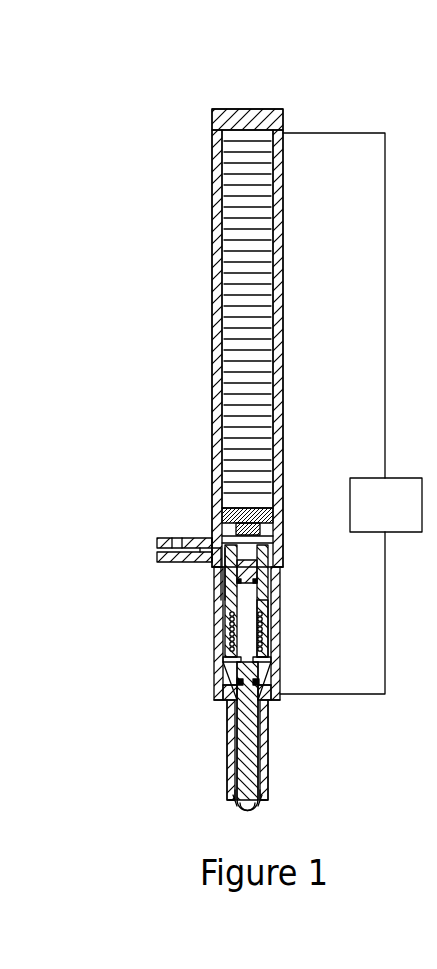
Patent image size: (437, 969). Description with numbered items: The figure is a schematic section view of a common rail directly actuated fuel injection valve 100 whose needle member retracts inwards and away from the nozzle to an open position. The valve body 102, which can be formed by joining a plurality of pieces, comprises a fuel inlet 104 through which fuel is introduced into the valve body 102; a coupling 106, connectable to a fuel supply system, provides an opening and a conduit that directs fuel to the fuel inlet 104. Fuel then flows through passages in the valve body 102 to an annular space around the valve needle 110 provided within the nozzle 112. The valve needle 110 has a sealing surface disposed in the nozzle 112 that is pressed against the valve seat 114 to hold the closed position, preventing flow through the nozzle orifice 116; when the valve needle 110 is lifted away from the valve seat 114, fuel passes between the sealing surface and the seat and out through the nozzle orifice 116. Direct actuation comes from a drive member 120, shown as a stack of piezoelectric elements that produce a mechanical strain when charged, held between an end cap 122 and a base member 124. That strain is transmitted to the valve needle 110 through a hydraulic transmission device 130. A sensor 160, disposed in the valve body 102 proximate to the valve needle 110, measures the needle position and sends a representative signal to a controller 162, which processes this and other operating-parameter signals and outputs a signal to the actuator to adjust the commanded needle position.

The fuel injection valve 100 is at (115, 124).
The valve body 102 is at (263, 672).
The fuel inlet 104 is at (214, 538).
The coupling 106 is at (170, 540).
The valve needle 110 is at (252, 733).
The nozzle 112 is at (265, 765).
The valve seat 114 is at (257, 802).
The nozzle orifice 116 is at (232, 794).
The drive member 120 is at (235, 320).
The end cap 122 is at (262, 110).
The base member 124 is at (224, 512).
The hydraulic transmission device 130 is at (178, 655).
The sensor 160 is at (262, 688).
The controller 162 is at (410, 518).